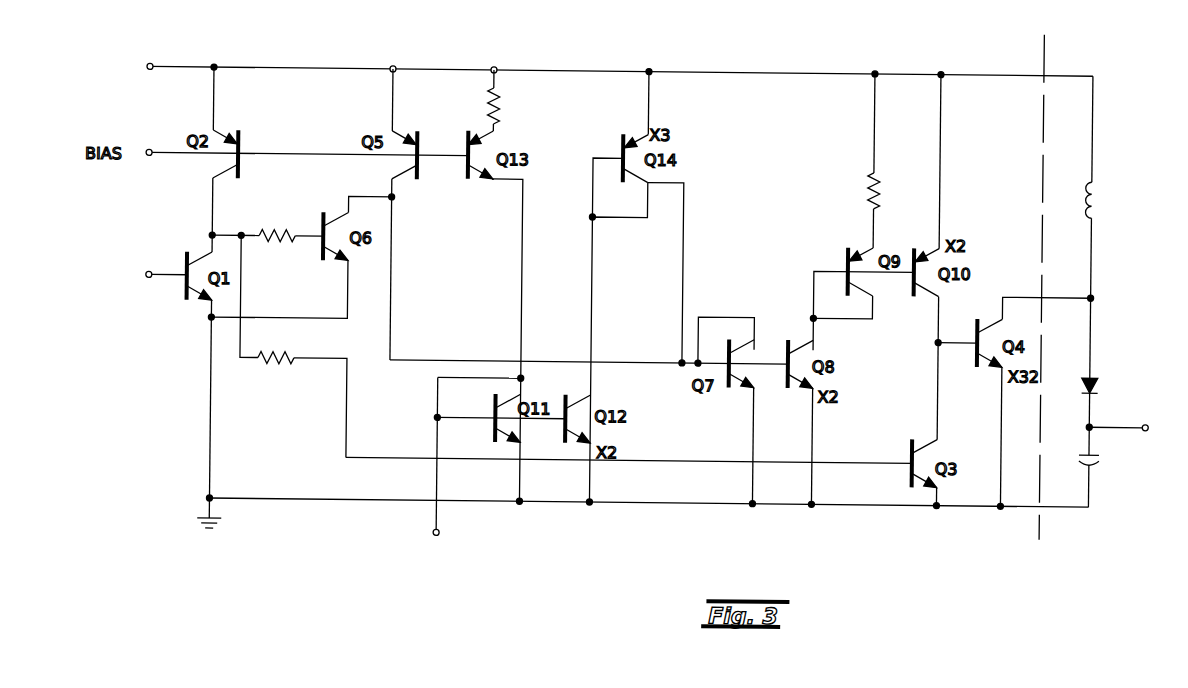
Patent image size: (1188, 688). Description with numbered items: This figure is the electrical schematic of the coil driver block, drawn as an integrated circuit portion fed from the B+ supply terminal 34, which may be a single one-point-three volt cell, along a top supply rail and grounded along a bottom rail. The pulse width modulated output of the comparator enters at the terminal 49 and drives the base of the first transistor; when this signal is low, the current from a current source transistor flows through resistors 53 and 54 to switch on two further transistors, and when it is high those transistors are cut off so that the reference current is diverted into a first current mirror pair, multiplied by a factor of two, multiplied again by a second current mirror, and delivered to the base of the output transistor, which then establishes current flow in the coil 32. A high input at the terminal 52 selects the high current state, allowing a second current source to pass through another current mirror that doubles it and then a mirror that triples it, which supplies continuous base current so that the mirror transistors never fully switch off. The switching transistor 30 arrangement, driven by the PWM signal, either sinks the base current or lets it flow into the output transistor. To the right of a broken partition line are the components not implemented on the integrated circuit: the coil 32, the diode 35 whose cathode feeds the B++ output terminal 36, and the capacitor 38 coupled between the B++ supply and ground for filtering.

The switching transistor 30 is at (684, 56).
The coil 32 is at (1096, 181).
The B+ supply terminal 34 is at (156, 64).
The diode 35 is at (1099, 380).
The B++ output terminal 36 is at (1147, 422).
The capacitor 38 is at (1096, 462).
The terminal 49 is at (159, 259).
The terminal 52 is at (444, 527).
The resistor 53 is at (279, 242).
The resistor 54 is at (279, 364).